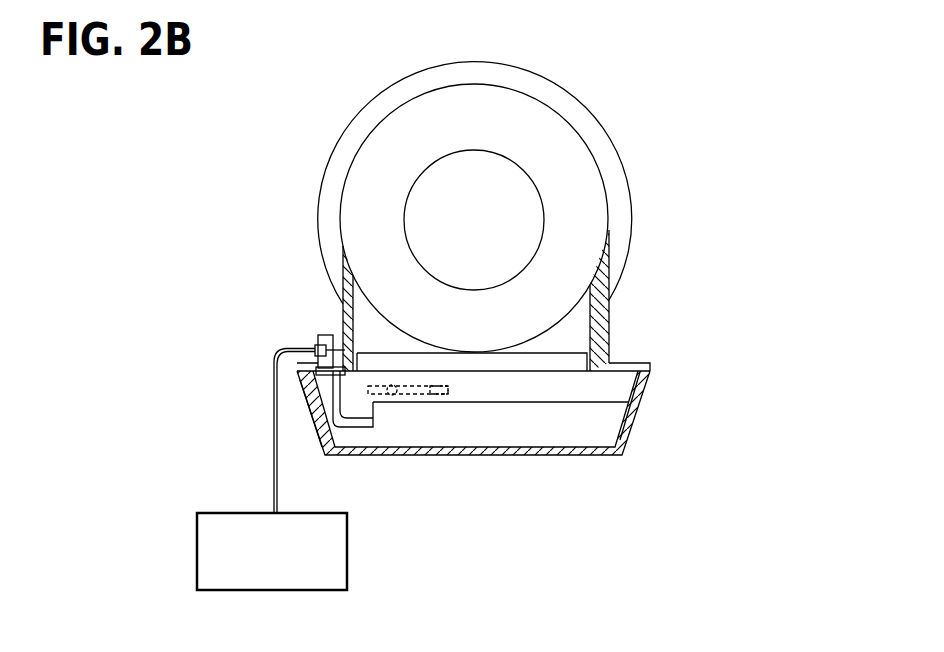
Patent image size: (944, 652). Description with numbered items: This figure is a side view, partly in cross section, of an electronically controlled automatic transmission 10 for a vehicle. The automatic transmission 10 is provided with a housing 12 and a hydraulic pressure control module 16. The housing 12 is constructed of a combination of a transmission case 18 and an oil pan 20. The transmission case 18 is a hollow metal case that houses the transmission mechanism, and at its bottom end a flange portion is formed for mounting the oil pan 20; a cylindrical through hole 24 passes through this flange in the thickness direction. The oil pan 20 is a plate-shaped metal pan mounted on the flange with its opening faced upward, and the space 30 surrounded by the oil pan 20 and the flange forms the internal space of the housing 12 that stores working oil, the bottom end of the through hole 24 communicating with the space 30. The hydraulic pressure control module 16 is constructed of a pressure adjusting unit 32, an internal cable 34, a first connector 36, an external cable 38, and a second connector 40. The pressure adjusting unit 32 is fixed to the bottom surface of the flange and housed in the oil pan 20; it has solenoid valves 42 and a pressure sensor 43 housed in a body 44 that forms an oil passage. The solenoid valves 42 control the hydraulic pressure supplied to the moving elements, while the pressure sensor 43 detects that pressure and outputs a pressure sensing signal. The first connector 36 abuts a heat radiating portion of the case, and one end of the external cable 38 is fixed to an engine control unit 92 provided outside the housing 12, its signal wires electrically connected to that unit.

The automatic transmission 10 is at (593, 103).
The housing 12 is at (521, 310).
The hydraulic pressure control module 16 is at (630, 408).
The transmission case 18 is at (602, 352).
The oil pan 20 is at (497, 371).
The through hole 24 is at (313, 408).
The space 30 is at (578, 425).
The pressure adjusting unit 32 is at (498, 479).
The internal cable 34 is at (350, 428).
The first connector 36 is at (327, 335).
The external cable 38 is at (276, 356).
The second connector 40 is at (315, 348).
The solenoid valve 42 is at (392, 394).
The pressure sensor 43 is at (440, 394).
The body 44 is at (535, 403).
The engine control unit 92 is at (347, 548).